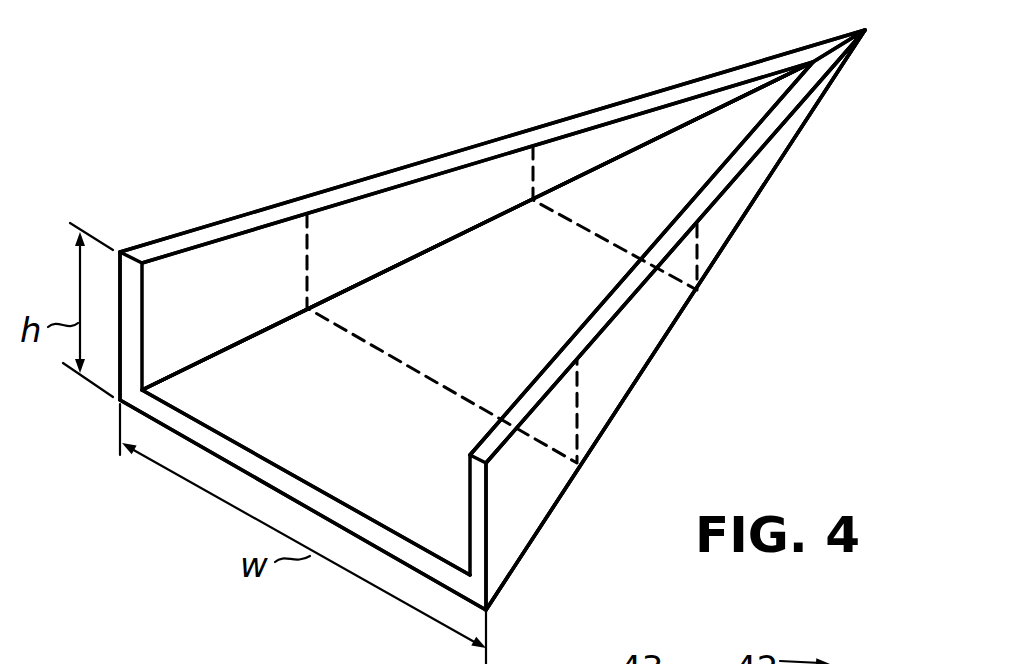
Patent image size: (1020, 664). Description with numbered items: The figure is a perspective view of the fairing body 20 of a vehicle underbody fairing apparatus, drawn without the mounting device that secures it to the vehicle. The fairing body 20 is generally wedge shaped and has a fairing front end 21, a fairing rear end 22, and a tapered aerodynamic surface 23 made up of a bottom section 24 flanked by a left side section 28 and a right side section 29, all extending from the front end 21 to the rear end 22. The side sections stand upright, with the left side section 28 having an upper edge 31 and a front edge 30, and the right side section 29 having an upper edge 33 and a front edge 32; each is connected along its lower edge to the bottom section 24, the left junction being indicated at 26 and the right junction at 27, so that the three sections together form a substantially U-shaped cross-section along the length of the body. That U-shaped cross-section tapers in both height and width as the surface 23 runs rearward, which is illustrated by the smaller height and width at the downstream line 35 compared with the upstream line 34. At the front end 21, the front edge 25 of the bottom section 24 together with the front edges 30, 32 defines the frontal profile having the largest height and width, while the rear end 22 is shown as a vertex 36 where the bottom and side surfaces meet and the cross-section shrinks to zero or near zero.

The fairing body 20 is at (404, 91).
The fairing front end 21 is at (206, 531).
The fairing rear end 22 is at (832, 22).
The tapered aerodynamic surface 23 is at (745, 348).
The bottom section 24 is at (375, 459).
The front edge of the bottom section 25 is at (405, 555).
The intersection of left side section lower edge and bottom section left edge 26 is at (612, 418).
The intersection of right side section lower edge and bottom section right edge 27 is at (232, 350).
The left side section 28 is at (640, 373).
The right side section 29 is at (416, 239).
The front edge of the left side section 30 is at (478, 542).
The upper edge of the left side section 31 is at (703, 202).
The front edge of the right side section 32 is at (128, 291).
The upper edge of the right side section 33 is at (205, 233).
The upstream location line 34 is at (410, 367).
The downstream location line 35 is at (598, 236).
The vertex 36 is at (864, 36).